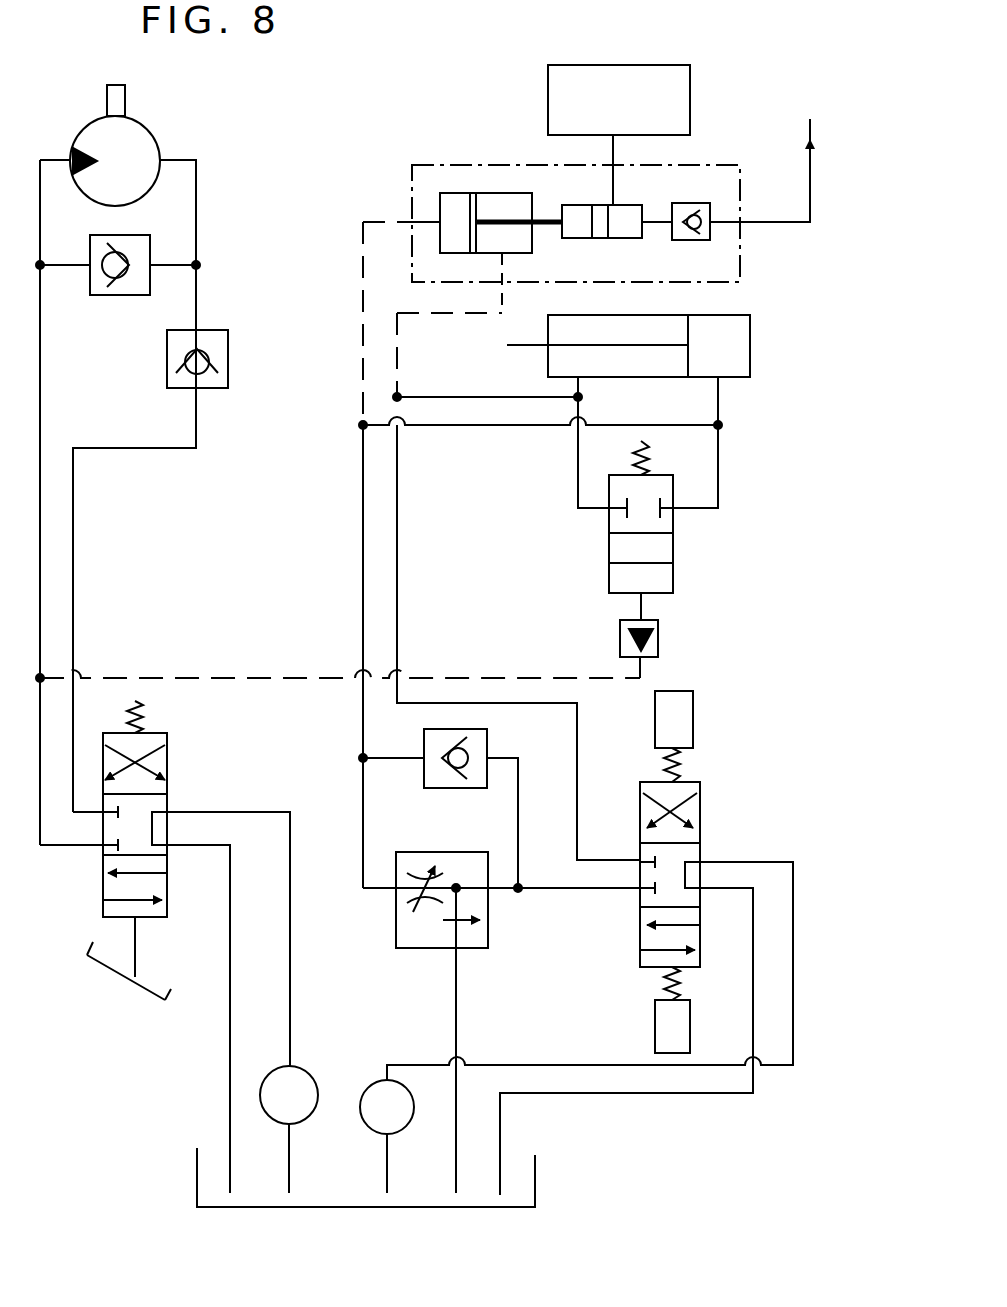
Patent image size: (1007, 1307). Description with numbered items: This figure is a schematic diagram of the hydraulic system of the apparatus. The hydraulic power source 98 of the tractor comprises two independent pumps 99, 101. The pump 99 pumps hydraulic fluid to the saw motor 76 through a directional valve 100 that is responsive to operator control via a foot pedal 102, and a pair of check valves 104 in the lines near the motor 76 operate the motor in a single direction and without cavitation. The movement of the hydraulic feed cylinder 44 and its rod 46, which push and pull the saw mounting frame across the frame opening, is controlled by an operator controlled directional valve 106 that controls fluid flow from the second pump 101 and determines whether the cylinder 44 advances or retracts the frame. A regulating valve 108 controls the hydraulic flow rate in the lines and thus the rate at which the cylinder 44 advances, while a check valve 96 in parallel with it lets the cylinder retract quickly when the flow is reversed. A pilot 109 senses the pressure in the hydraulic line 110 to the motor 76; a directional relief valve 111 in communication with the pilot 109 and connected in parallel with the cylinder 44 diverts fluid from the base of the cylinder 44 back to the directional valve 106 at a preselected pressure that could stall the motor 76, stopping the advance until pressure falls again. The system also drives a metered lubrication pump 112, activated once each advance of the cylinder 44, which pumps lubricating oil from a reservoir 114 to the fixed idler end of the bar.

The saw motor 76 is at (158, 140).
The check valves 104 is at (167, 357).
The reservoir 114 is at (548, 87).
The metered lubrication pump 112 is at (445, 163).
The hydraulic feed cylinder 44 is at (732, 315).
The rod 46 is at (529, 345).
The directional relief valve 111 is at (609, 522).
The pilot 109 is at (620, 640).
The hydraulic line 110 is at (40, 645).
The directional valve 100 is at (167, 800).
The foot pedal 102 is at (168, 998).
The check valve 96 is at (487, 740).
The regulating valve 108 is at (488, 928).
The directional valve 106 is at (700, 850).
The pump 99 is at (306, 1071).
The pump 101 is at (364, 1089).
The hydraulic power source 98 is at (216, 1117).